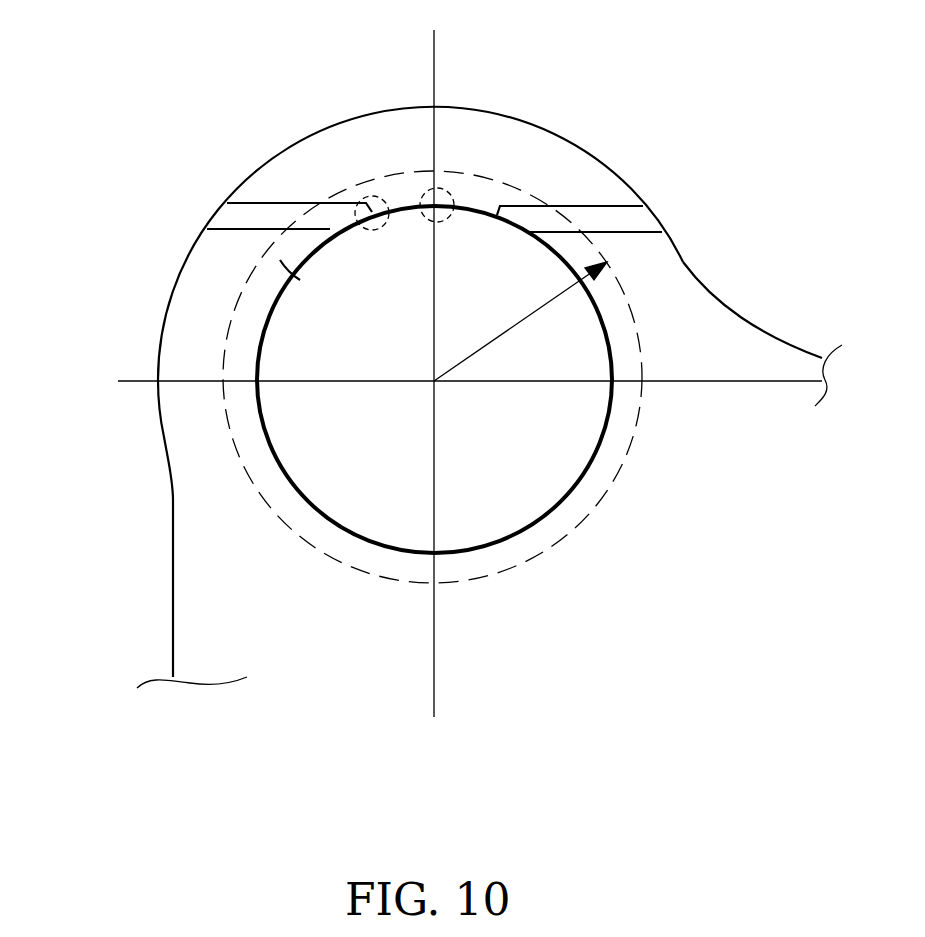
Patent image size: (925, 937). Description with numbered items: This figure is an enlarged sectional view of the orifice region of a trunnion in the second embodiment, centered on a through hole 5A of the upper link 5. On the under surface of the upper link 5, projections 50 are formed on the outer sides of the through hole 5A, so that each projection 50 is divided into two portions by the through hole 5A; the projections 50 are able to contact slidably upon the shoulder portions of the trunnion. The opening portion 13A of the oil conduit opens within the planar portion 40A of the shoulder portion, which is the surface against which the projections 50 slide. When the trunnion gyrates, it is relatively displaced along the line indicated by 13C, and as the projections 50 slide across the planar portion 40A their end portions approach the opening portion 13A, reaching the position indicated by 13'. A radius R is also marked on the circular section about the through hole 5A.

The upper link 5 is at (152, 566).
The through hole 5A is at (280, 426).
The planar portion 40A is at (222, 352).
The projection 50 is at (247, 213).
The opening portion 13A is at (428, 198).
The position of opening portion 13' is at (300, 120).
The line of relative displacement 13C is at (292, 273).
The radius R is at (525, 322).